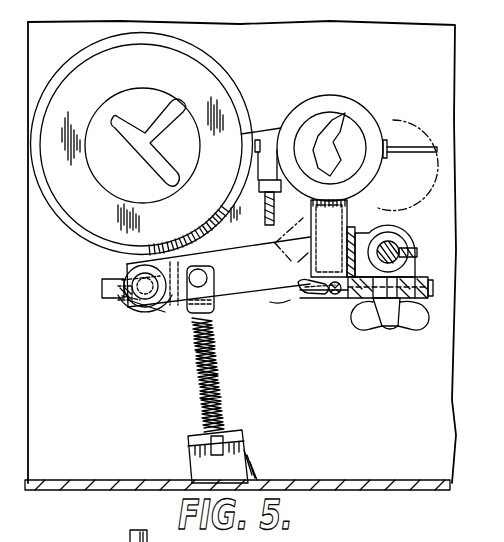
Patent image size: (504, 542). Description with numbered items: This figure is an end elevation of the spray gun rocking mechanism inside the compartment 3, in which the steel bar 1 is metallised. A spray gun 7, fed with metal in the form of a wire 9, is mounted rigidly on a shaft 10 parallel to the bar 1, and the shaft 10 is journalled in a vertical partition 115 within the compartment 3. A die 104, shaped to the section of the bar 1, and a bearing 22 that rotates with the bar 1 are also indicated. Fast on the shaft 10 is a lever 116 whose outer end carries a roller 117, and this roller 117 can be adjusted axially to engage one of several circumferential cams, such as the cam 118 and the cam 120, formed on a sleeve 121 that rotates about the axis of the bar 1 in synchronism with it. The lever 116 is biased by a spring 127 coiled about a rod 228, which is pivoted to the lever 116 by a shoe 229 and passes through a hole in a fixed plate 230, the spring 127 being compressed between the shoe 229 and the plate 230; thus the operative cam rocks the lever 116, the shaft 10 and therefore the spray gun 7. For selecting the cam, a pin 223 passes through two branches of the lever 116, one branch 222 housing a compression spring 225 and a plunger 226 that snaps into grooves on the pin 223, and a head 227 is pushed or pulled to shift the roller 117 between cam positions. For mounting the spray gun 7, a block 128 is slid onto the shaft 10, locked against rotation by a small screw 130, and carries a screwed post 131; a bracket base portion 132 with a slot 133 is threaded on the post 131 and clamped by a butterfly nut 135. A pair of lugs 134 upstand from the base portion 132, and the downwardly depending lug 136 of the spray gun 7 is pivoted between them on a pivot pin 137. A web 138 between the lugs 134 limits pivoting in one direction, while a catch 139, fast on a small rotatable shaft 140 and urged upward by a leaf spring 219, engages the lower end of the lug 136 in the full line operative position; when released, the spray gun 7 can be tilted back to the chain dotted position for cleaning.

The steel bar 1 is at (157, 134).
The compartment 3 is at (304, 63).
The spray gun 7 is at (340, 106).
The wire 9 is at (395, 150).
The shaft 10 is at (392, 245).
The bearing 22 is at (428, 284).
The die 104 is at (105, 170).
The partition 115 is at (306, 468).
The lever 116 is at (238, 292).
The roller 117 is at (139, 316).
The cam 118 is at (257, 140).
The cam 120 is at (97, 240).
The sleeve 121 is at (115, 100).
The spring 127 is at (226, 384).
The block 128 is at (410, 277).
The small screw 130 is at (405, 246).
The screwed post 131 is at (431, 296).
The base portion 132 is at (352, 300).
The slot 133 is at (430, 316).
The lugs 134 is at (345, 226).
The butterfly nut 135 is at (410, 330).
The lug 136 is at (298, 266).
The pivot pin 137 is at (322, 218).
The web 138 is at (377, 225).
The catch 139 is at (303, 285).
The small rotatable shaft 140 is at (321, 300).
The leaf spring 219 is at (290, 302).
The branch 222 is at (103, 290).
The pin 223 is at (130, 303).
The compression spring 225 is at (120, 298).
The plunger 226 is at (124, 280).
The head 227 is at (162, 303).
The rod 228 is at (205, 379).
The shoe 229 is at (208, 272).
The fixed plate 230 is at (188, 452).